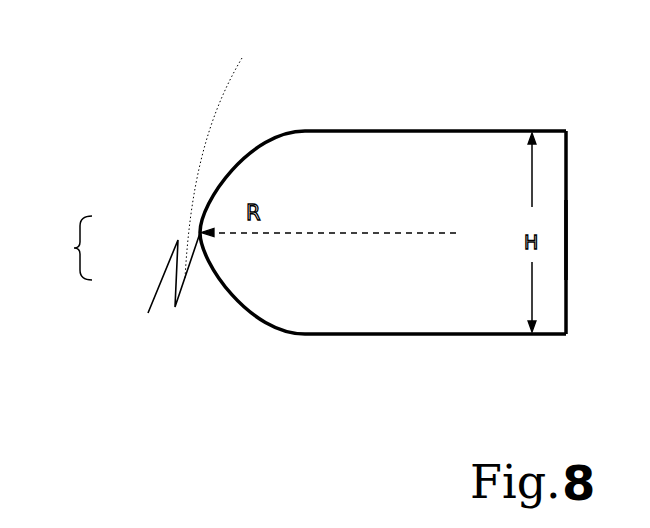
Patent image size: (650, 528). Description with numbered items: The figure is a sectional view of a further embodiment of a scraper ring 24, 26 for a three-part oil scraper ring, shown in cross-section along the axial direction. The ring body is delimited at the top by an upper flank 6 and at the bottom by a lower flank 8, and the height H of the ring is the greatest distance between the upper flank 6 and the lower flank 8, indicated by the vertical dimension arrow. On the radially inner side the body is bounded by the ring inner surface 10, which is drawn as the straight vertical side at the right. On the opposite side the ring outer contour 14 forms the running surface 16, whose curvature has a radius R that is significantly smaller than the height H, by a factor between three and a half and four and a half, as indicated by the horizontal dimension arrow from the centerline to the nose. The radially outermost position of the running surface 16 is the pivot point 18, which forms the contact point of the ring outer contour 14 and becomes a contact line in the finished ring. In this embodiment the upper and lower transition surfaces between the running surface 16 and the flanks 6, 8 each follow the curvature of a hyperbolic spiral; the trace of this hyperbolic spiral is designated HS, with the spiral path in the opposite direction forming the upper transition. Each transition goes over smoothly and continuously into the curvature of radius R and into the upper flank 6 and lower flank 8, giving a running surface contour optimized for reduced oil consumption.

The upper flank 6 is at (443, 129).
The lower flank 8 is at (433, 337).
The ring inner surface 10 is at (569, 258).
The ring outer contour 14 is at (215, 187).
The running surface 16 is at (74, 248).
The pivot point 18 is at (166, 289).
The scraper ring 24 is at (569, 183).
The scraper ring 26 is at (560, 120).
The trace of the hyperbolic spiral HS is at (217, 105).